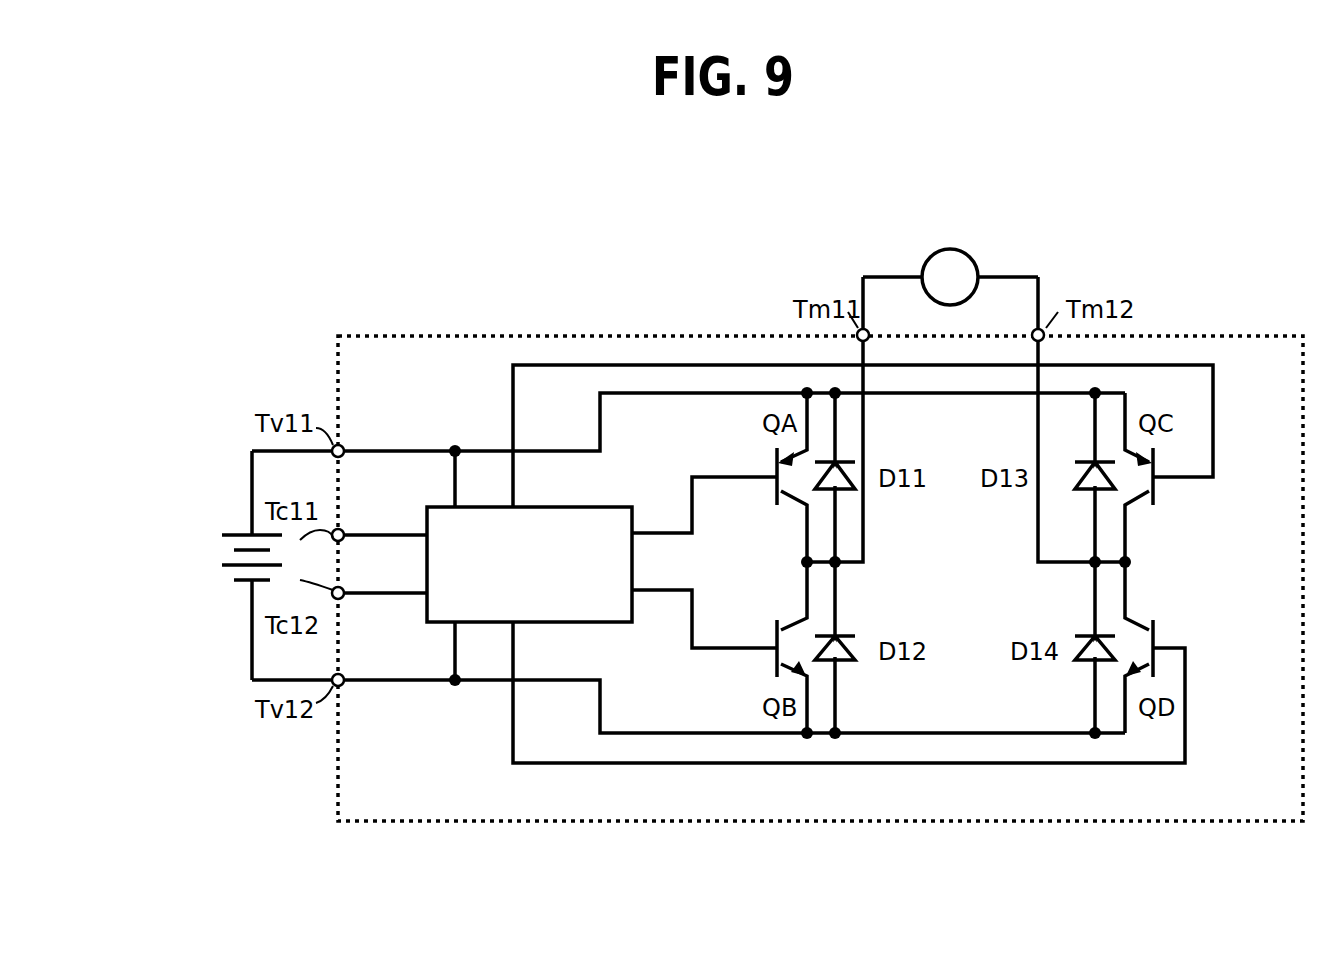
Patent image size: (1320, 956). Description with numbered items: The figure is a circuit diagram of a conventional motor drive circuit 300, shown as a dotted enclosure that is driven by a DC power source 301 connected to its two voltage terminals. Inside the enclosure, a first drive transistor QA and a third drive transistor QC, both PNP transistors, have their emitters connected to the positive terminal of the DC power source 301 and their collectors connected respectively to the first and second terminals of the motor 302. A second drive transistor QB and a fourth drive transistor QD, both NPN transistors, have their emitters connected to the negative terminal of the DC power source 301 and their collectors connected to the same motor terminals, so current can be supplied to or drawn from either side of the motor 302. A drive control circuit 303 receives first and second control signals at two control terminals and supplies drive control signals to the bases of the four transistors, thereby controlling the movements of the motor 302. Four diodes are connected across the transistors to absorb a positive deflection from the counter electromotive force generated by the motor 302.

The conventional motor drive circuit 300 is at (350, 336).
The DC power source 301 is at (212, 569).
The motor 302 is at (960, 255).
The drive control circuit 303 is at (555, 507).